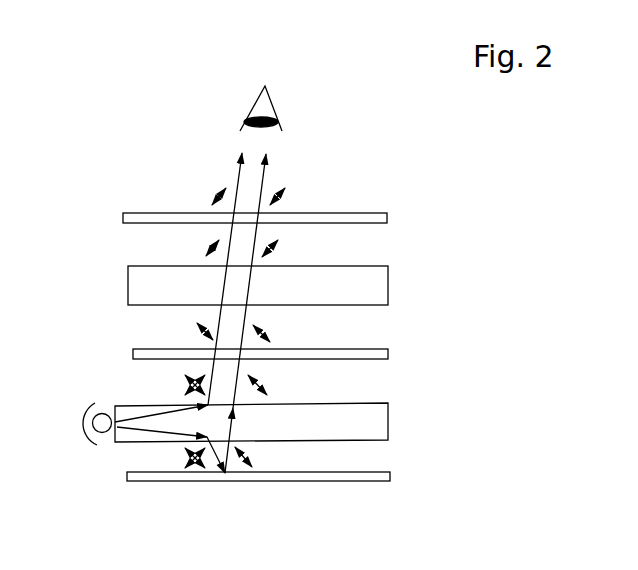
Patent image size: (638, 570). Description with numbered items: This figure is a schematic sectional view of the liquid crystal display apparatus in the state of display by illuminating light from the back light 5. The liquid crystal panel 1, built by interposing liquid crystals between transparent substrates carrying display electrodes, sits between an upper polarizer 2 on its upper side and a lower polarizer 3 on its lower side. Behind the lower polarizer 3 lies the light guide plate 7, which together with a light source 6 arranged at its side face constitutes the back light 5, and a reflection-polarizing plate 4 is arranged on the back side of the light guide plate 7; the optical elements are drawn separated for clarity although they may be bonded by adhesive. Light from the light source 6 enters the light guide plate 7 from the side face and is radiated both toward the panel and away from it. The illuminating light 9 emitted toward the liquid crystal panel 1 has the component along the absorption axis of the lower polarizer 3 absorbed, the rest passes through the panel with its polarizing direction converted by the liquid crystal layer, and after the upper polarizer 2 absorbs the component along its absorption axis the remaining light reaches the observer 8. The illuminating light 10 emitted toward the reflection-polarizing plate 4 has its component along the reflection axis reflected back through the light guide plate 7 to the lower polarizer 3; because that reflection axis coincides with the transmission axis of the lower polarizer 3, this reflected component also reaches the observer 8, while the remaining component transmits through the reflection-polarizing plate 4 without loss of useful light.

The liquid crystal panel 1 is at (377, 275).
The upper polarizer 2 is at (378, 212).
The lower polarizer 3 is at (375, 352).
The reflection-polarizing plate 4 is at (389, 472).
The back light 5 is at (100, 448).
The light source 6 is at (85, 413).
The light guide plate 7 is at (380, 418).
The observer 8 is at (272, 105).
The illuminating light 9 is at (130, 418).
The illuminating light 10 is at (153, 433).